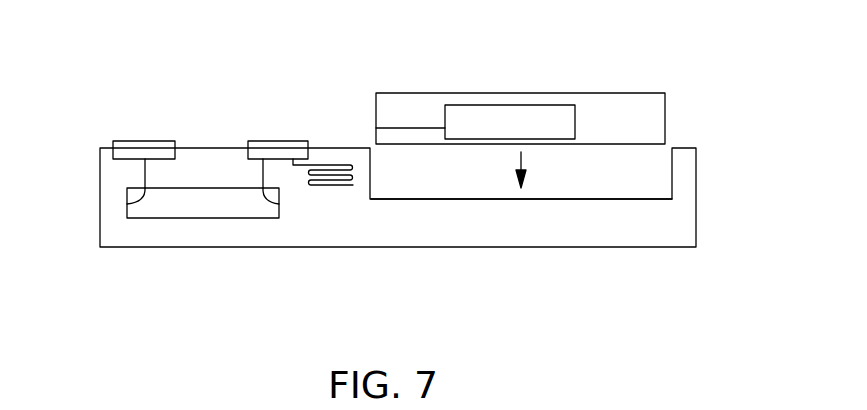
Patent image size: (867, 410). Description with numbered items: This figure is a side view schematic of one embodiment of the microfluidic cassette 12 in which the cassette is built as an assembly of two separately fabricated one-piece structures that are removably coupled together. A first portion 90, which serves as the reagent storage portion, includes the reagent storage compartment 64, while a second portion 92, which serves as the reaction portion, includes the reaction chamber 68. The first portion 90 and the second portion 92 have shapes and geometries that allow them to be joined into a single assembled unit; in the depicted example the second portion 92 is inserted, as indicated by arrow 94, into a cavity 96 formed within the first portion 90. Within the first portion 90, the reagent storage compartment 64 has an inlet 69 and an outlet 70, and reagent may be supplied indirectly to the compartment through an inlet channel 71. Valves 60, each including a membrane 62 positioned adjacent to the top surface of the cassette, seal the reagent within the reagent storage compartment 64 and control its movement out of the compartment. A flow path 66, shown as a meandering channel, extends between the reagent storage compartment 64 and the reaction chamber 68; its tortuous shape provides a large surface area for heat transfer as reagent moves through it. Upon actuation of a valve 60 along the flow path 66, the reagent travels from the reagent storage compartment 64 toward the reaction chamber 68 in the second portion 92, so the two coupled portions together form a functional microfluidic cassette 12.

The microfluidic cassette 12 is at (434, 165).
The valve 60 is at (159, 120).
The membrane 62 is at (130, 141).
The reagent storage compartment 64 is at (203, 218).
The flow path 66 is at (336, 163).
The reaction chamber 68 is at (520, 115).
The inlet 69 is at (130, 200).
The outlet 70 is at (278, 203).
The inlet channel 71 is at (143, 175).
The first portion 90 is at (99, 148).
The second portion 92 is at (641, 93).
The arrow 94 is at (524, 163).
The cavity 96 is at (635, 199).